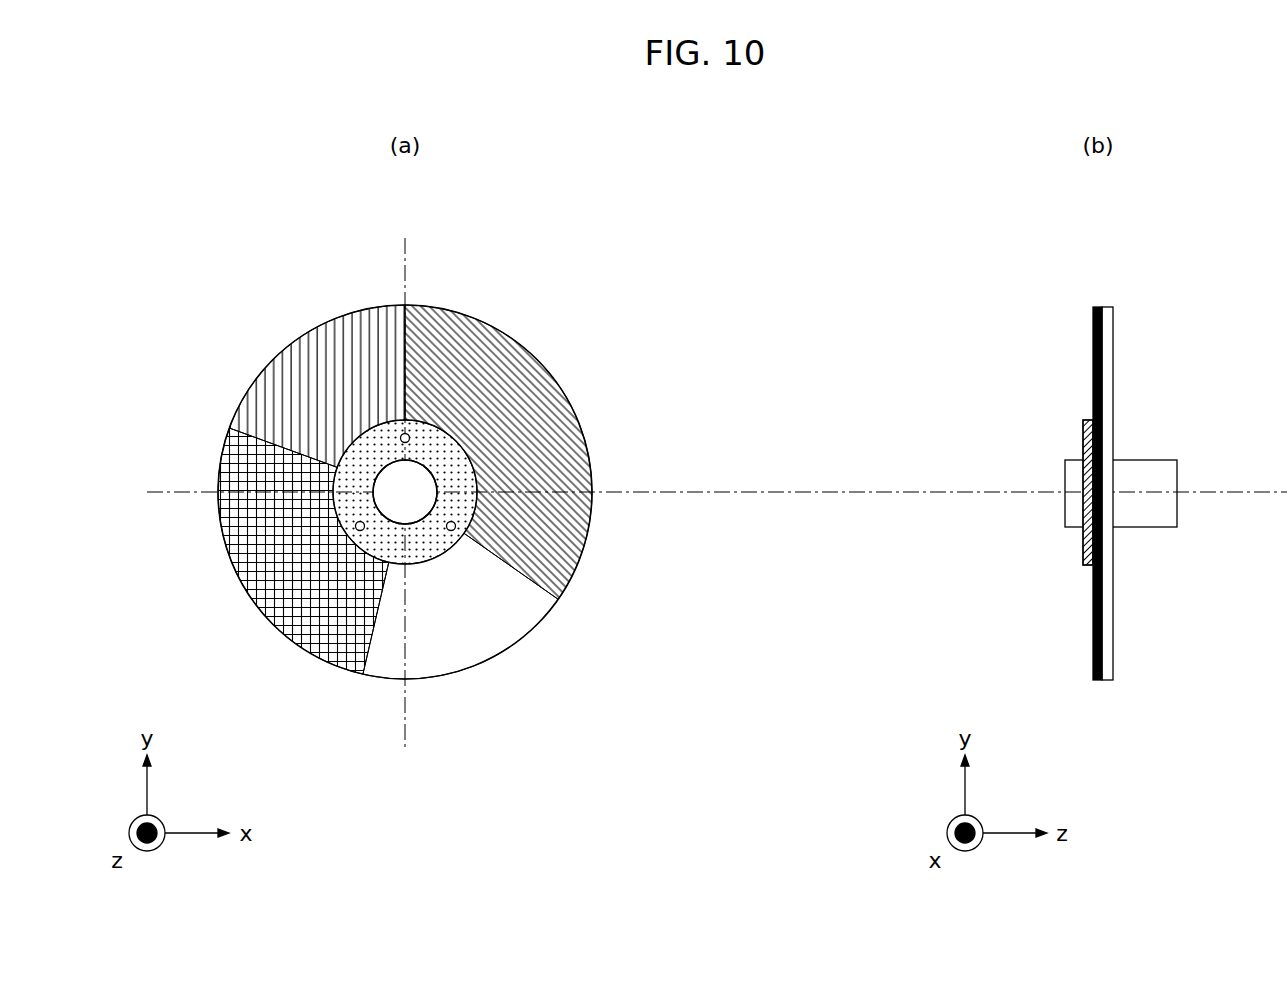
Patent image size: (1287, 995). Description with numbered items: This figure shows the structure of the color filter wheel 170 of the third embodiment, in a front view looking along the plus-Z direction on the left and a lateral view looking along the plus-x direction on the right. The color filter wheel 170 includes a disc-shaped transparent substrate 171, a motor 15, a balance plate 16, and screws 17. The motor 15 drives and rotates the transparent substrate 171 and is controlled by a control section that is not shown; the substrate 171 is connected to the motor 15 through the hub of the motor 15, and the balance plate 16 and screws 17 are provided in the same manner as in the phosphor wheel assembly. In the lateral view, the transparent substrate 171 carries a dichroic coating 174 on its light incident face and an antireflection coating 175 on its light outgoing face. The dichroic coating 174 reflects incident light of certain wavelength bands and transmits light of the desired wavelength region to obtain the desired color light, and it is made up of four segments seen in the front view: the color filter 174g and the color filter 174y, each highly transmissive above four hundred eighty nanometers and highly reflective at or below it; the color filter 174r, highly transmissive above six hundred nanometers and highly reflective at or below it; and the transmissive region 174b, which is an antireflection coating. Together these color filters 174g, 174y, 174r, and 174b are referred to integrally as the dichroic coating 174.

The color filter wheel 170 is at (349, 244).
The transparent substrate 171 is at (310, 333).
The dichroic coating 174 is at (1098, 305).
The antireflection coating 175 is at (1113, 403).
The color filter 174g is at (450, 343).
The color filter 174y is at (267, 402).
The color filter 174r is at (243, 503).
The transmissive region 174b is at (440, 653).
The screws 17 is at (410, 438).
The balance plate 16 is at (333, 507).
The motor 15 is at (426, 488).